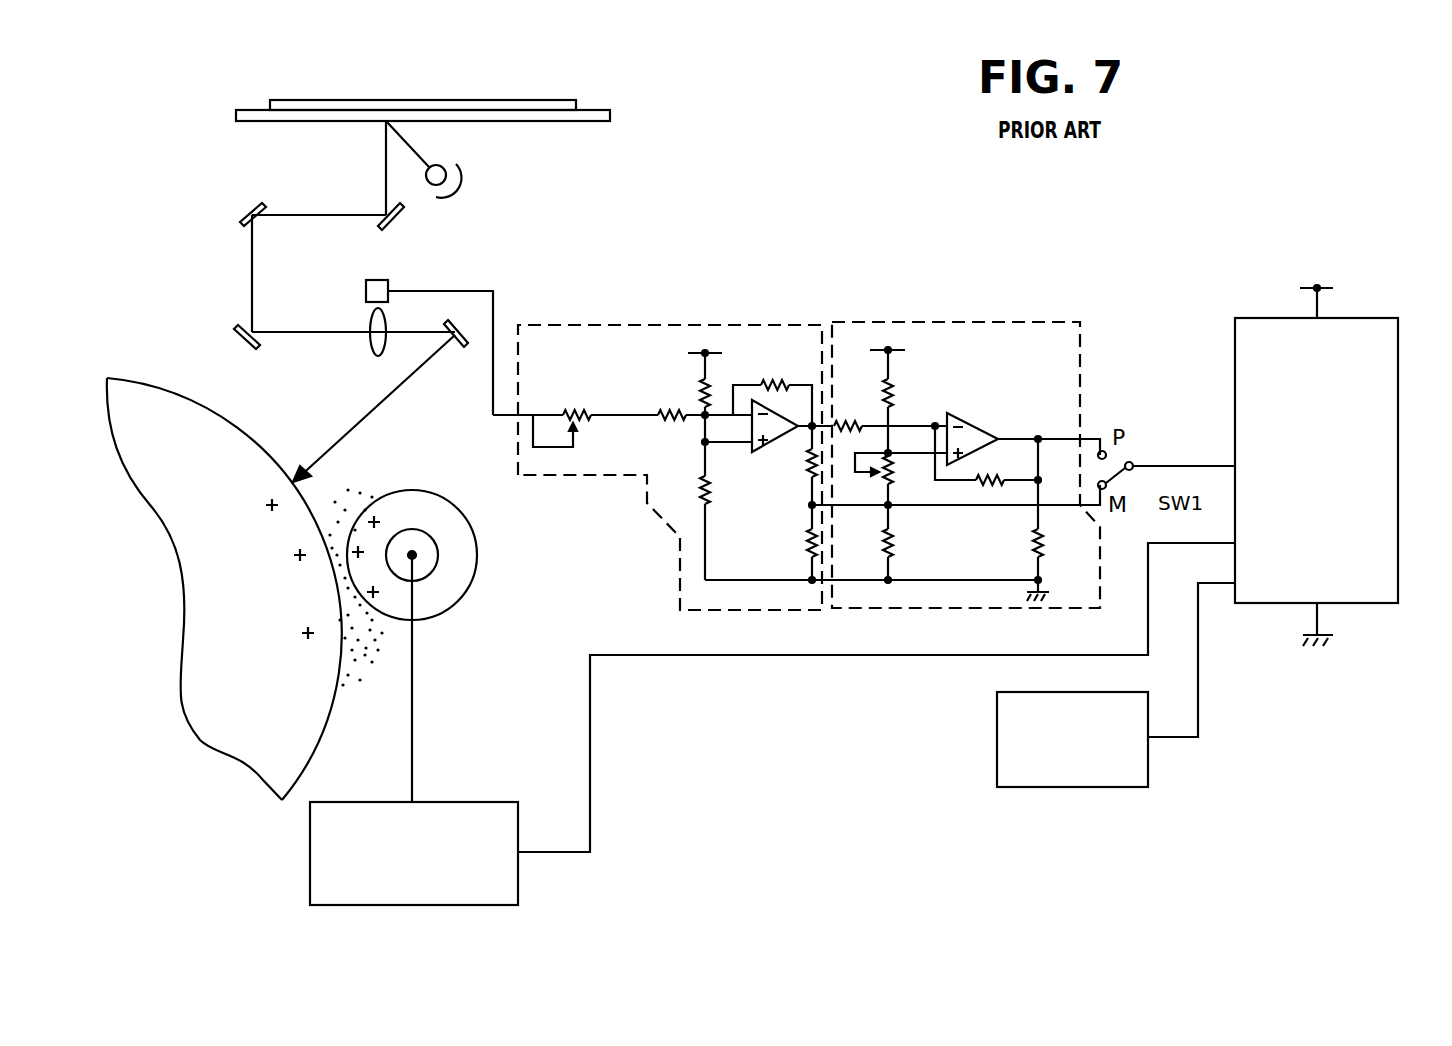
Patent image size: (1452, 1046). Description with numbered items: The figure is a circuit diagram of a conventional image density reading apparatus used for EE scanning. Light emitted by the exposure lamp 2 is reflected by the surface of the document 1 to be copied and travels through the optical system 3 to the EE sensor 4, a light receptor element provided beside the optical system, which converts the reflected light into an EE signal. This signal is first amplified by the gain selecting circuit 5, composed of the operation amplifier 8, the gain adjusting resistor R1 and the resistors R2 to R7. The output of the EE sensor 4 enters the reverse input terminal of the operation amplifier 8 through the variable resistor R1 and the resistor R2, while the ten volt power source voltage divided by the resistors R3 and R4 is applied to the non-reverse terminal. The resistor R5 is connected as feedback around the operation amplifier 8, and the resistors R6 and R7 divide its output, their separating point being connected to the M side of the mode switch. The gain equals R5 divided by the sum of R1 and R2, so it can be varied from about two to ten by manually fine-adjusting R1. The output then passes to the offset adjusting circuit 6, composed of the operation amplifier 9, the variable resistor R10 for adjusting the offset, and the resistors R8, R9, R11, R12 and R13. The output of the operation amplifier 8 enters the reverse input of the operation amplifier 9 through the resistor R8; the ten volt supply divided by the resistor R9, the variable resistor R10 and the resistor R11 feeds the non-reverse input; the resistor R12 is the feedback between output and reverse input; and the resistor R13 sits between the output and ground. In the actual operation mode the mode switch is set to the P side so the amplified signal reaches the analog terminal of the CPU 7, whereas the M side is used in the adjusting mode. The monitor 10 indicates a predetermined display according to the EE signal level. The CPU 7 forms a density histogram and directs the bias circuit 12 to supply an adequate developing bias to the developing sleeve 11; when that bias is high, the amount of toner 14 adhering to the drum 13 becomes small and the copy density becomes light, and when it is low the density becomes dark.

The document 1 is at (485, 95).
The exposure lamp 2 is at (448, 162).
The optical system 3 is at (368, 345).
The EE sensor 4 is at (385, 280).
The gain selecting circuit 5 is at (765, 436).
The offset adjusting circuit 6 is at (956, 435).
The CPU 7 is at (1235, 383).
The operation amplifier 8 is at (758, 453).
The operation amplifier 9 is at (963, 418).
The monitor 10 is at (1078, 787).
The developing sleeve 11 is at (462, 563).
The bias circuit 12 is at (436, 802).
The drum 13 is at (190, 657).
The toner 14 is at (365, 487).
The gain adjusting resistor R1 is at (562, 414).
The resistor R2 is at (670, 431).
The resistor R3 is at (685, 387).
The resistor R4 is at (685, 490).
The resistor R5 is at (773, 372).
The resistor R6 is at (792, 463).
The resistor R7 is at (792, 543).
The resistor R8 is at (847, 411).
The resistor R9 is at (905, 393).
The variable resistor R10 is at (897, 477).
The resistor R11 is at (912, 543).
The resistor R12 is at (994, 466).
The resistor R13 is at (1062, 543).